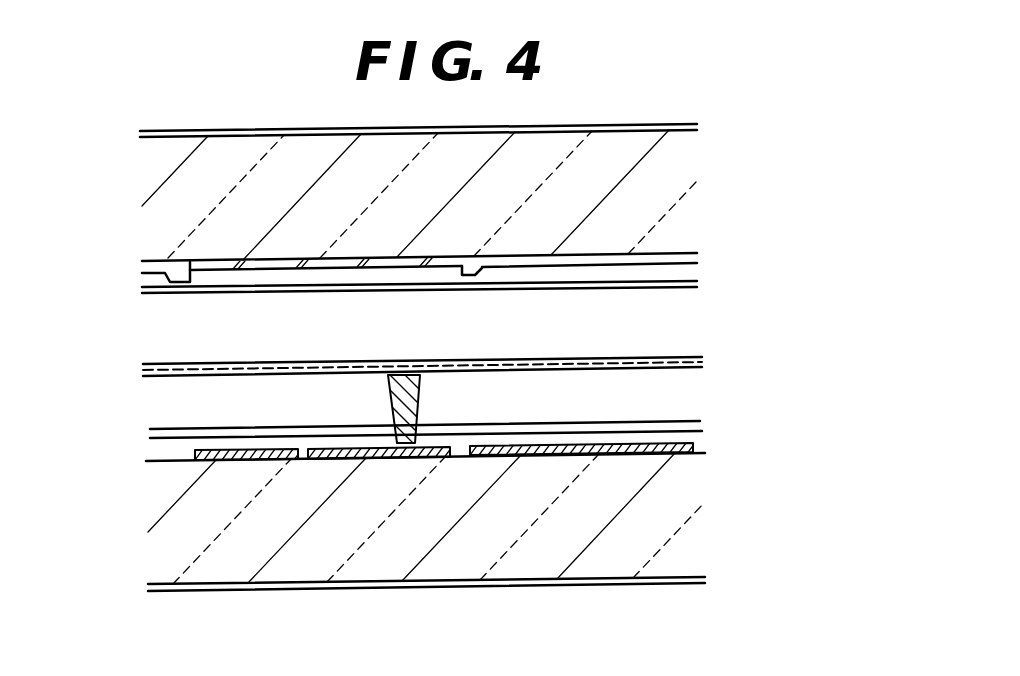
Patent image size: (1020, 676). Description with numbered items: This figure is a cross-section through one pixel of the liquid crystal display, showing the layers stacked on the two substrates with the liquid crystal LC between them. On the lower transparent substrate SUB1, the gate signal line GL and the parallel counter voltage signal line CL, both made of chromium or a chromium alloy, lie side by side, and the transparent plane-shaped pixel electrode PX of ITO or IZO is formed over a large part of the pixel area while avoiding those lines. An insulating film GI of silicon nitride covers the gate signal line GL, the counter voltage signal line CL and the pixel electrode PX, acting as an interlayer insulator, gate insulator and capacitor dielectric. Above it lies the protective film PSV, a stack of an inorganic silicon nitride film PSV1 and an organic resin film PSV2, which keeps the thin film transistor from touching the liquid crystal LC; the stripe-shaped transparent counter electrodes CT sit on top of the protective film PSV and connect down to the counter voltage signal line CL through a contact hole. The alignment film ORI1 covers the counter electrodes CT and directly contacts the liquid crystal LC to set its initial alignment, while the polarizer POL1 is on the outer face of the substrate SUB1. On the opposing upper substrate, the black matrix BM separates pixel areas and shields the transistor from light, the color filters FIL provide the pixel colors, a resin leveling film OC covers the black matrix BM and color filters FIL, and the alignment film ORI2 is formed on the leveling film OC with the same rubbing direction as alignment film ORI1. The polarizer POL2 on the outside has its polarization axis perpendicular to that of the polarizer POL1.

The polarizer POL2 is at (697, 126).
The color filter FIL is at (693, 255).
The leveling film OC is at (698, 270).
The black matrix BM is at (183, 263).
The alignment film ORI2 is at (698, 283).
The liquid crystal LC is at (675, 333).
The counter electrode CT is at (702, 363).
The alignment film ORI1 is at (143, 370).
The protective film PSV is at (507, 403).
The organic film PSV2 is at (683, 393).
The inorganic film PSV1 is at (698, 420).
The insulating film GI is at (698, 438).
The gate signal line GL is at (242, 462).
The counter voltage signal line CL is at (351, 462).
The pixel electrode PX is at (593, 455).
The transparent substrate SUB1 is at (157, 550).
The polarizer POL1 is at (705, 578).